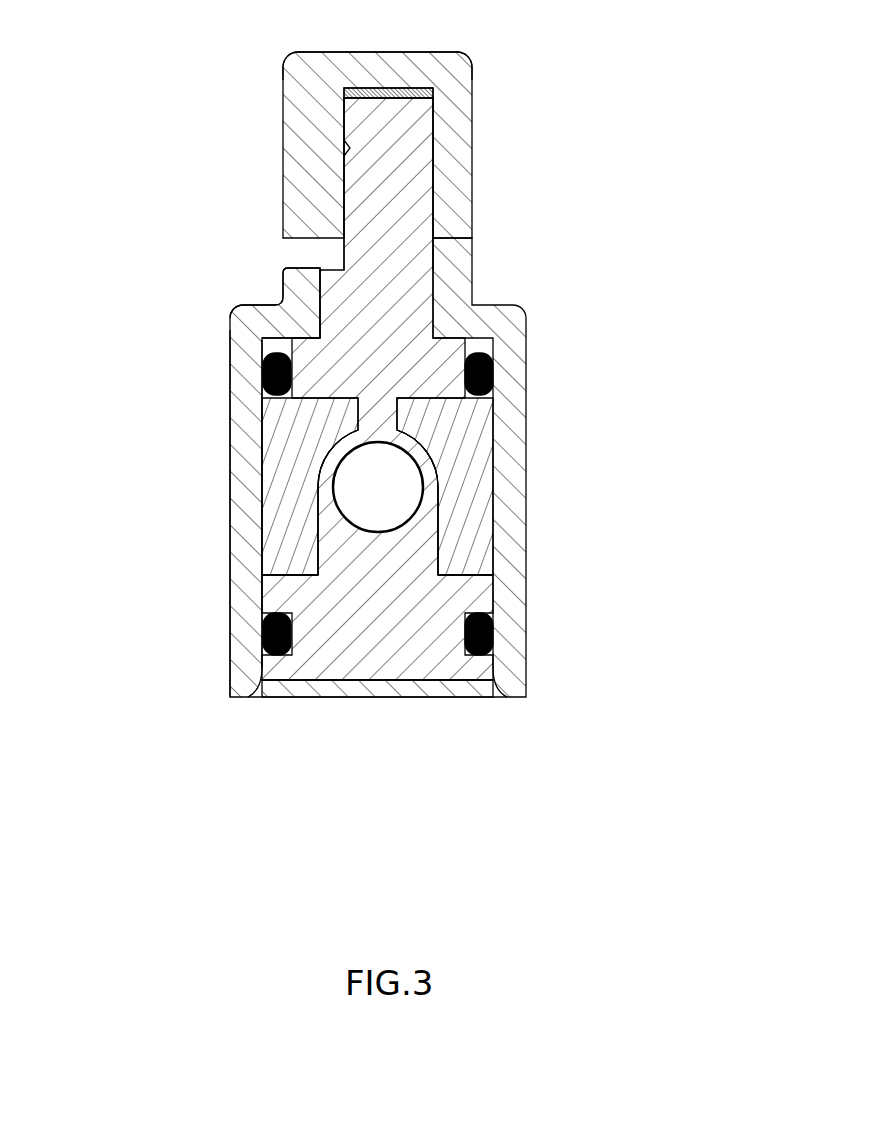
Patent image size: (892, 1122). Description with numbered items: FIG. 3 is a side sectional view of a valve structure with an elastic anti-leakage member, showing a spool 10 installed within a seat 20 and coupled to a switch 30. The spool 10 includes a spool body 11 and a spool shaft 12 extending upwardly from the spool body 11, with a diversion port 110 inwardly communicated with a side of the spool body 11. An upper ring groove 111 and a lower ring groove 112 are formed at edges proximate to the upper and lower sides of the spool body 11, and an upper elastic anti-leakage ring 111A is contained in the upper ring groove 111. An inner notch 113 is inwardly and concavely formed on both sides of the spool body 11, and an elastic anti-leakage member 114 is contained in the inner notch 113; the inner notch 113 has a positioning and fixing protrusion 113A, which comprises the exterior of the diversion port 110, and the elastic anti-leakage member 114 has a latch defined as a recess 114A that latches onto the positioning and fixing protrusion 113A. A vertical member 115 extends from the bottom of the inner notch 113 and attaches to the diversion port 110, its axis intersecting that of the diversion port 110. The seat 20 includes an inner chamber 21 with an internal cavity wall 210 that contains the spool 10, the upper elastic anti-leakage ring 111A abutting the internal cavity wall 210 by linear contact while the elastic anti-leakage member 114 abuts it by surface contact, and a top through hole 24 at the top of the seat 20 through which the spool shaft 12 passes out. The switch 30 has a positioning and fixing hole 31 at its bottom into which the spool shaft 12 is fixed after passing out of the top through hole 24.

The spool 10 is at (377, 769).
The internal cavity wall 210 is at (378, 688).
The seat 20 is at (547, 320).
The inner chamber 21 is at (232, 592).
The top through hole 24 is at (283, 282).
The switch 30 is at (497, 100).
The positioning and fixing hole 31 is at (295, 52).
The spool body 11 is at (455, 338).
The spool shaft 12 is at (360, 182).
The diversion port 110 is at (407, 486).
The upper ring groove 111 is at (240, 306).
The upper elastic anti-leakage ring 111A is at (262, 362).
The lower ring groove 112 is at (477, 665).
The inner notch 113 is at (318, 567).
The positioning and fixing protrusion 113A is at (322, 488).
The elastic anti-leakage member 114 is at (277, 480).
The recess 114A is at (320, 518).
The vertical member 115 is at (522, 695).